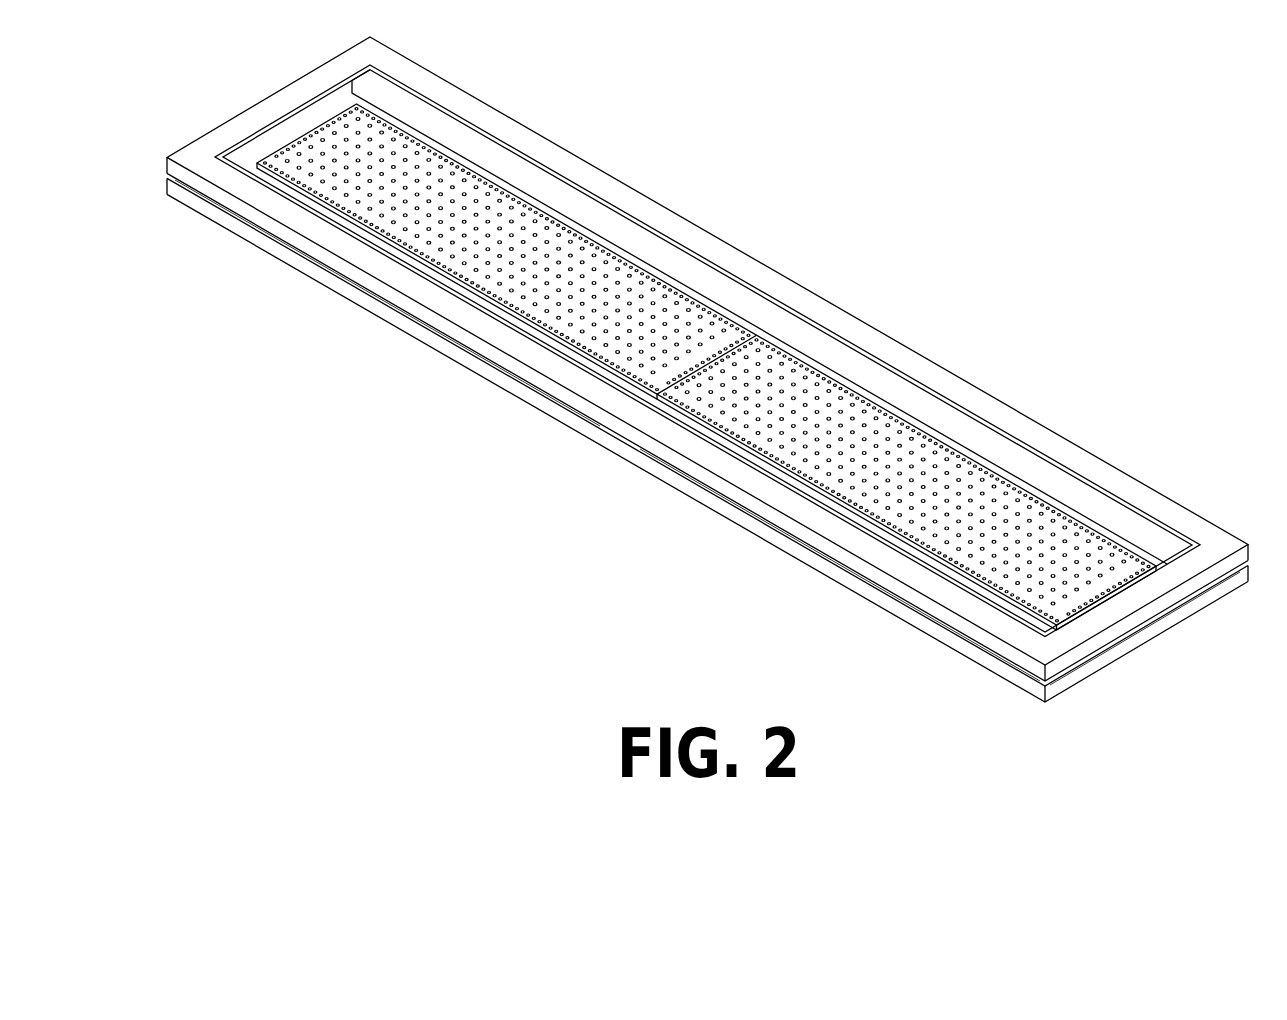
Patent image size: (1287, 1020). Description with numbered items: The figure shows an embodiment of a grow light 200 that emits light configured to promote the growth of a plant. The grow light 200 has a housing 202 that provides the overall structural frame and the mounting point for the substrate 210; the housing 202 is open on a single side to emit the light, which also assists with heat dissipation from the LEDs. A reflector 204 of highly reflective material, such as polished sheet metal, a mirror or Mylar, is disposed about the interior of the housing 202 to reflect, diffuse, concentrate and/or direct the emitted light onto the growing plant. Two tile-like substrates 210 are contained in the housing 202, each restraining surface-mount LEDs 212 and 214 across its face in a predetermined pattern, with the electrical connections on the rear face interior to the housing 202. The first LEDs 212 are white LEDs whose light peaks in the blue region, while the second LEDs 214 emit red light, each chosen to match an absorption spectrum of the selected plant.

The grow light 200 is at (703, 369).
The housing 202 is at (435, 76).
The reflector 204 is at (522, 168).
The substrate 210 is at (657, 343).
The first LEDs 212 is at (294, 152).
The second LEDs 214 is at (272, 165).